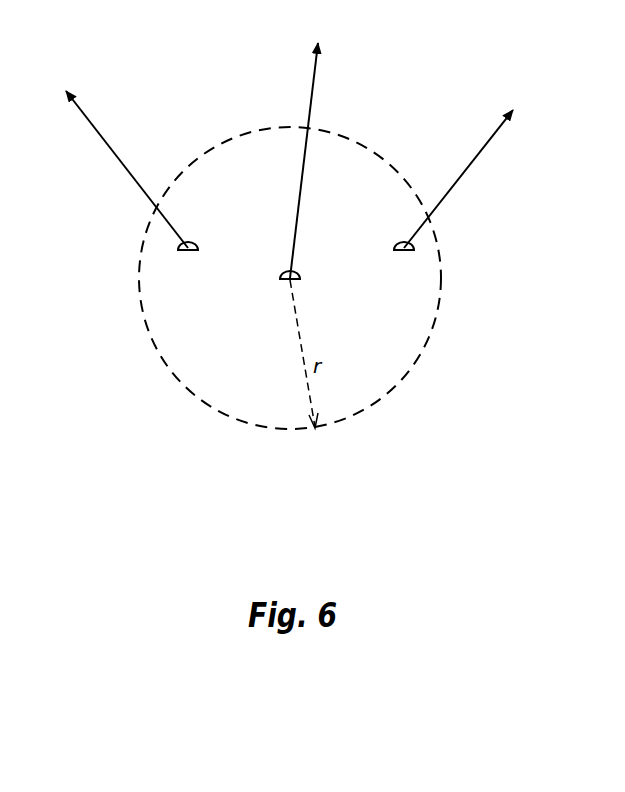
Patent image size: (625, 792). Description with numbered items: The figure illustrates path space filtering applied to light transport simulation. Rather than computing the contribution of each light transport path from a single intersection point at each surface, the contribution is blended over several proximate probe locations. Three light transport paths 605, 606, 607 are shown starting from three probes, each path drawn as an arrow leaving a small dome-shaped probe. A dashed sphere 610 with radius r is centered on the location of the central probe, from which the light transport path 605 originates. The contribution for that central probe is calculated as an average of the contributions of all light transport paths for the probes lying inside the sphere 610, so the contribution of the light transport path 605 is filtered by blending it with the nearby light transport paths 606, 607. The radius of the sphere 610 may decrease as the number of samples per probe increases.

The light transport path 605 is at (297, 213).
The light transport path 606 is at (477, 155).
The light transport path 607 is at (142, 191).
The sphere 610 is at (432, 327).